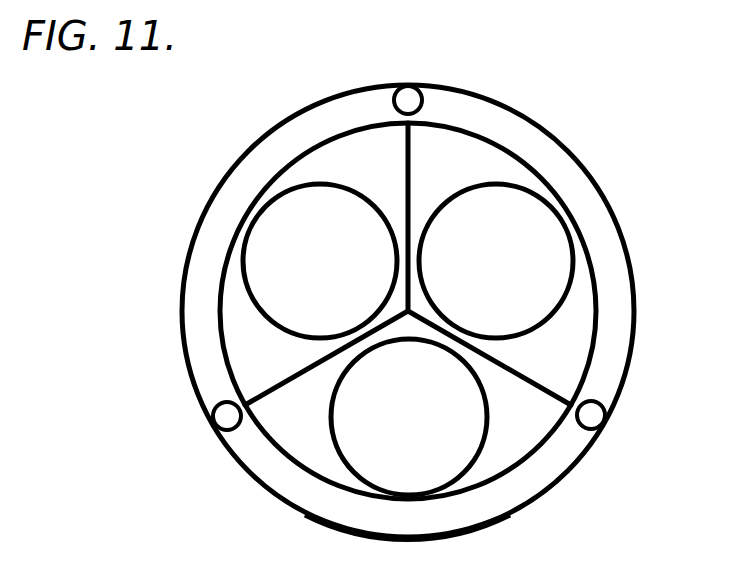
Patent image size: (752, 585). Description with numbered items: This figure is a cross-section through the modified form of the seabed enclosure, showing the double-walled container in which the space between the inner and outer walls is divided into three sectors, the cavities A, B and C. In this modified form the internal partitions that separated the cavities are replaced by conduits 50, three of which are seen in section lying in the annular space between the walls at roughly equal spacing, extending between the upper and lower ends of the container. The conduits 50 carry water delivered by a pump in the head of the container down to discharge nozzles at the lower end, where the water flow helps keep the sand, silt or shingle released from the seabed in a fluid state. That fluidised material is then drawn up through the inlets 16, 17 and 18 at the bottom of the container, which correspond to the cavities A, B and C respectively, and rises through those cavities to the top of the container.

The inlet 16 is at (199, 282).
The inlet 17 is at (614, 284).
The inlet 18 is at (316, 508).
The conduits 50 is at (406, 98).
The cavity A is at (472, 507).
The cavity B is at (230, 190).
The cavity C is at (585, 180).